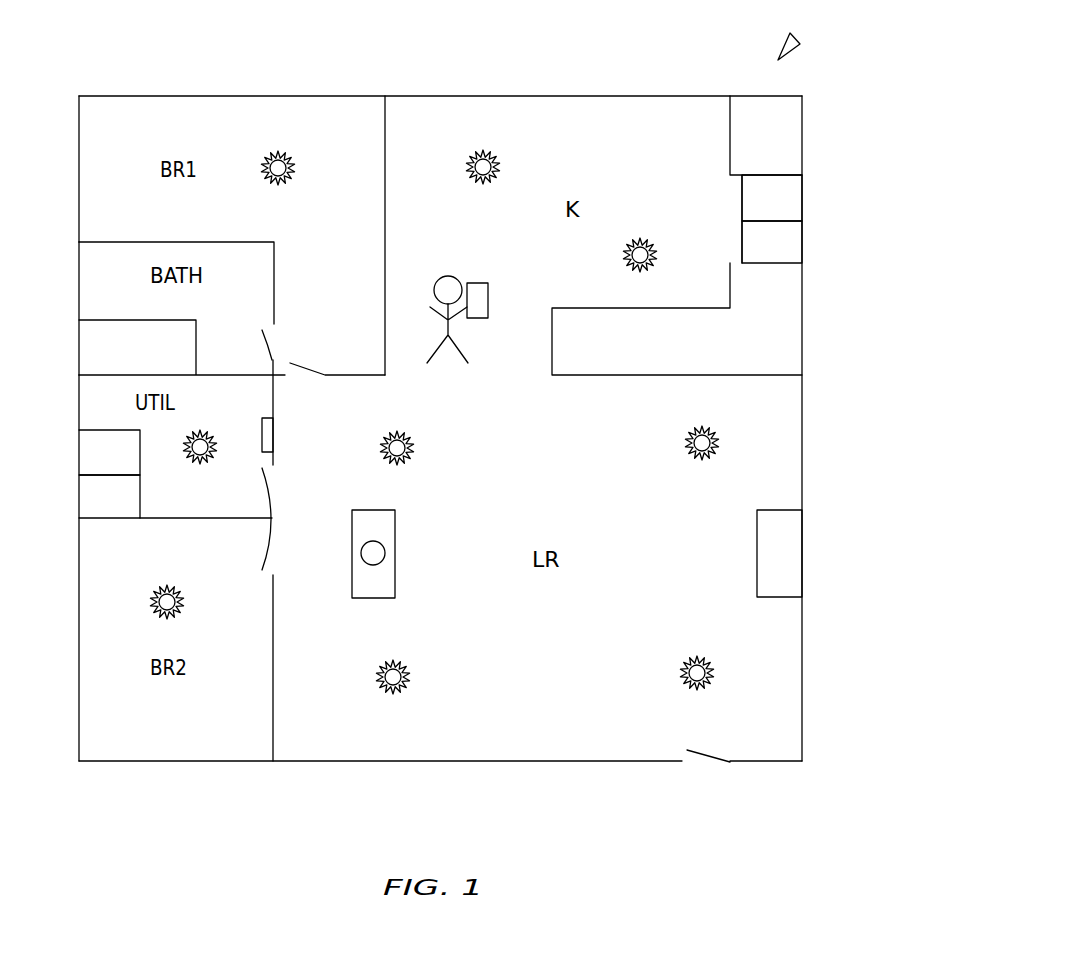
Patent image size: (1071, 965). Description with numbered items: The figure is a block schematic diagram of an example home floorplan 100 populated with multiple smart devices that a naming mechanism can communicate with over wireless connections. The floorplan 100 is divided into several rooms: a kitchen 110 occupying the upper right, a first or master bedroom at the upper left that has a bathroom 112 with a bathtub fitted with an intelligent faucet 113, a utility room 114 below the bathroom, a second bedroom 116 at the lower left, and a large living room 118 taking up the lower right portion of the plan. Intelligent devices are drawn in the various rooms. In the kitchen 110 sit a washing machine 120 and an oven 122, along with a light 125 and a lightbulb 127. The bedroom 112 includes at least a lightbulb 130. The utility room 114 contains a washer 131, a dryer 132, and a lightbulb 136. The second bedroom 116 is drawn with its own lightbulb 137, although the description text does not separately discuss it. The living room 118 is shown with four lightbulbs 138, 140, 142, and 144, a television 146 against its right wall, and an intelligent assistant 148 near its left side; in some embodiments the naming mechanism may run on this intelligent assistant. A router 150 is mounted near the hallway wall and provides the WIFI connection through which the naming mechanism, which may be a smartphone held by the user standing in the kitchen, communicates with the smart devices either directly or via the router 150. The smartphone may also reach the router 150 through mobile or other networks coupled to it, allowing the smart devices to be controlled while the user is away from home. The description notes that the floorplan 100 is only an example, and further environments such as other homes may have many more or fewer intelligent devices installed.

The home floorplan 100 is at (800, 36).
The kitchen 110 is at (600, 102).
The bathroom 112 is at (79, 176).
The intelligent faucet 113 is at (79, 349).
The utility room 114 is at (79, 403).
The second bedroom 116 is at (79, 542).
The living room 118 is at (497, 752).
The washing machine 120 is at (797, 243).
The oven 122 is at (797, 195).
The light 125 is at (492, 153).
The lightbulb 127 is at (648, 242).
The lightbulb 130 is at (287, 157).
The washer 131 is at (79, 453).
The dryer 132 is at (79, 497).
The lightbulb 136 is at (207, 435).
The light fixture 137 is at (173, 588).
The lightbulb 138 is at (405, 437).
The lightbulb 140 is at (710, 432).
The lightbulb 142 is at (400, 665).
The lightbulb 144 is at (705, 662).
The television 146 is at (777, 508).
The intelligent assistant 148 is at (385, 553).
The router 150 is at (273, 430).